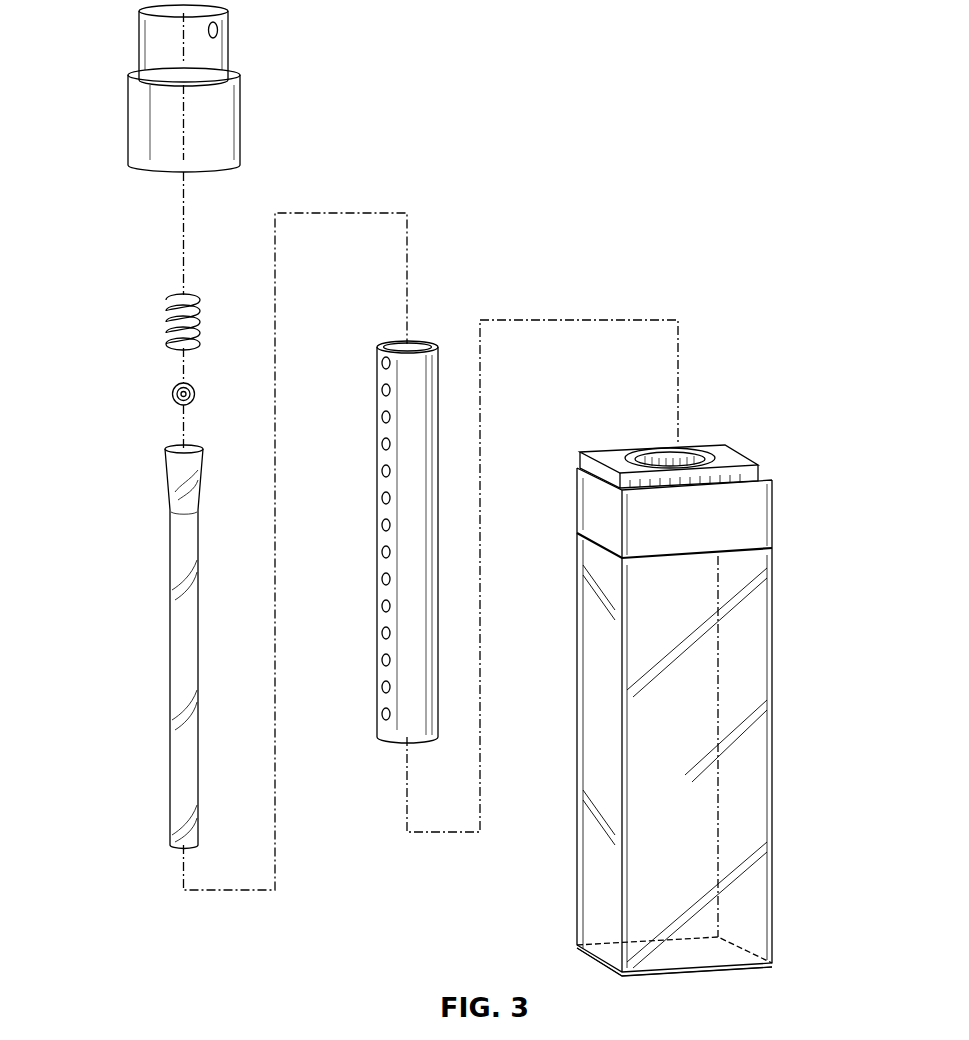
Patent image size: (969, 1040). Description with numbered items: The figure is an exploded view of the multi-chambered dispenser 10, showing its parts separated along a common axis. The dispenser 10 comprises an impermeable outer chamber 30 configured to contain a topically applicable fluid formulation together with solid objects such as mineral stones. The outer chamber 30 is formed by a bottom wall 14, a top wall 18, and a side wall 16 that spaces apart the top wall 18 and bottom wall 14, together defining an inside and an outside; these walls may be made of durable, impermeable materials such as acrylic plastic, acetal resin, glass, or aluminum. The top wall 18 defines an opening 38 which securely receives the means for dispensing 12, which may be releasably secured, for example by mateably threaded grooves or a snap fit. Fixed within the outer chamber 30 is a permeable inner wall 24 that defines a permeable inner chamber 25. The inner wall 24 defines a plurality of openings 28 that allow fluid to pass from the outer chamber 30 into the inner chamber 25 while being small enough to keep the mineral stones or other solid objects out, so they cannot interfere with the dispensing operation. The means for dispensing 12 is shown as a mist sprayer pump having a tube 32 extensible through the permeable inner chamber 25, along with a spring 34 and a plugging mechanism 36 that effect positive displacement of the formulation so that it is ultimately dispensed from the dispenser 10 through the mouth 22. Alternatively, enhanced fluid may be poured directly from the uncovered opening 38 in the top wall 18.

The multi-chambered dispenser 10 is at (572, 431).
The means for dispensing 12 is at (128, 72).
The bottom wall 14 is at (755, 975).
The side wall 16 is at (772, 763).
The top wall 18 is at (730, 465).
The mouth 22 is at (216, 30).
The permeable inner wall 24 is at (362, 520).
The permeable inner chamber 25 is at (402, 339).
The opening 28 is at (384, 528).
The impermeable outer chamber 30 is at (694, 690).
The tube 32 is at (187, 632).
The spring 34 is at (178, 320).
The plugging mechanism 36 is at (180, 393).
The opening 38 is at (668, 468).